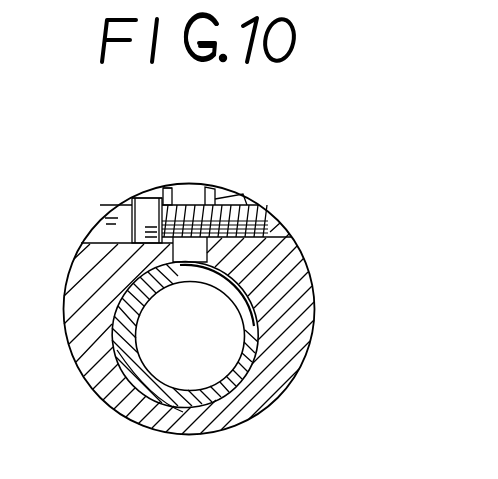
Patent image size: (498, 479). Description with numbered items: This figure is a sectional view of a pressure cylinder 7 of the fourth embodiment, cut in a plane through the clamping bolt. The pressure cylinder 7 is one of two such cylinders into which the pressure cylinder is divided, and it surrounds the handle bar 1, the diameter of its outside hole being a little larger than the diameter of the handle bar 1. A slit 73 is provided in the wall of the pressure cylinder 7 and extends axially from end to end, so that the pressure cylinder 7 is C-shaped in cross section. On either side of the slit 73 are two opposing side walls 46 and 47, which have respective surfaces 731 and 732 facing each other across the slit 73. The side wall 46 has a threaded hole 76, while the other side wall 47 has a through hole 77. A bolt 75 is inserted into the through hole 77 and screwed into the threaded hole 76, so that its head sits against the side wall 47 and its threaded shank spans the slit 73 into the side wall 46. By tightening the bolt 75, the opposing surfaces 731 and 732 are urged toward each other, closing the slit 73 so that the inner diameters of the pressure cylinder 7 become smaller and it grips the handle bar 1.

The handle bar 1 is at (250, 357).
The pressure cylinder 7 is at (295, 320).
The side wall 46 is at (160, 187).
The side wall 47 is at (220, 198).
The slit 73 is at (221, 189).
The surface 731 is at (170, 190).
The surface 732 is at (206, 184).
The bolt 75 is at (143, 222).
The threaded hole 76 is at (257, 227).
The through hole 77 is at (150, 192).